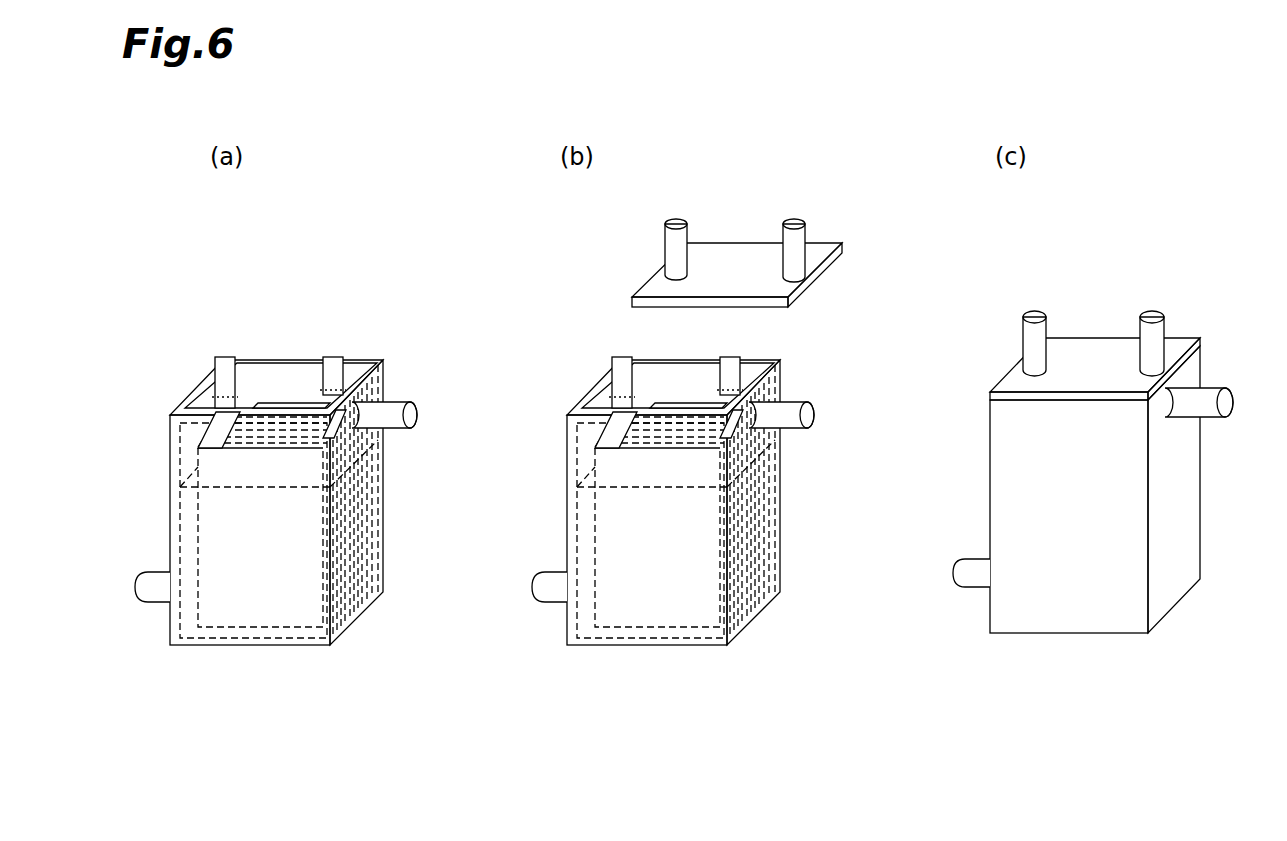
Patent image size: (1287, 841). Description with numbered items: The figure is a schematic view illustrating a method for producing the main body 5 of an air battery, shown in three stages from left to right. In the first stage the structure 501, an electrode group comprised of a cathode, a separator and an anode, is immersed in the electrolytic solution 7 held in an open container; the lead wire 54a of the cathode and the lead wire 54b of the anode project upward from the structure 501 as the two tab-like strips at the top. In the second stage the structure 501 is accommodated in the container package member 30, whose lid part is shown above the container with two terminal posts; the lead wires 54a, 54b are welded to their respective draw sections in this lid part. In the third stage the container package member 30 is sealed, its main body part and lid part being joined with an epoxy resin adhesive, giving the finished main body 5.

The main body 5 is at (1222, 250).
The electrolytic solution 7 is at (187, 632).
The container package member 30 is at (782, 490).
The lead wire 54a is at (221, 357).
The lead wire 54b is at (337, 357).
The structure 501 is at (290, 400).